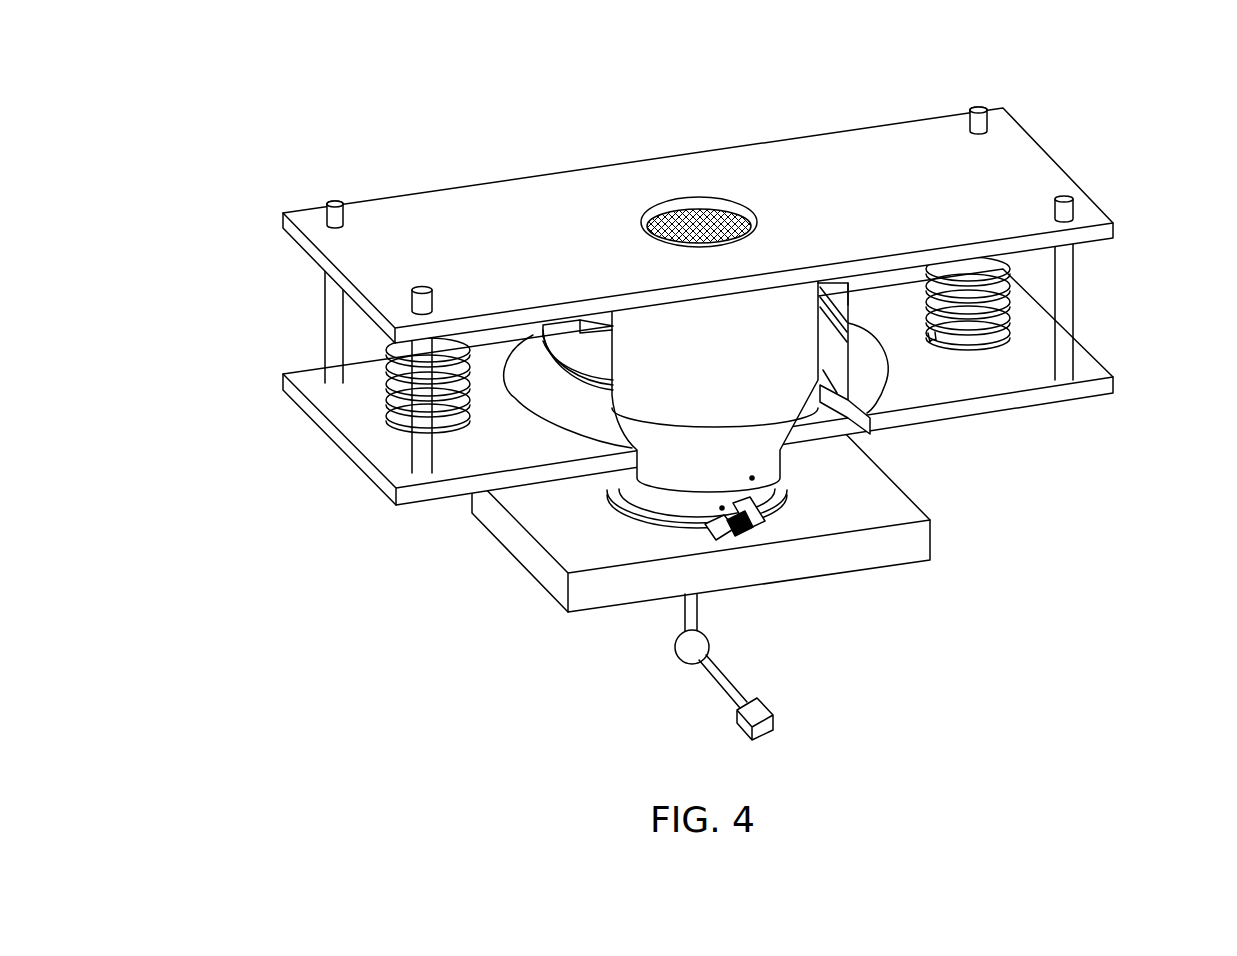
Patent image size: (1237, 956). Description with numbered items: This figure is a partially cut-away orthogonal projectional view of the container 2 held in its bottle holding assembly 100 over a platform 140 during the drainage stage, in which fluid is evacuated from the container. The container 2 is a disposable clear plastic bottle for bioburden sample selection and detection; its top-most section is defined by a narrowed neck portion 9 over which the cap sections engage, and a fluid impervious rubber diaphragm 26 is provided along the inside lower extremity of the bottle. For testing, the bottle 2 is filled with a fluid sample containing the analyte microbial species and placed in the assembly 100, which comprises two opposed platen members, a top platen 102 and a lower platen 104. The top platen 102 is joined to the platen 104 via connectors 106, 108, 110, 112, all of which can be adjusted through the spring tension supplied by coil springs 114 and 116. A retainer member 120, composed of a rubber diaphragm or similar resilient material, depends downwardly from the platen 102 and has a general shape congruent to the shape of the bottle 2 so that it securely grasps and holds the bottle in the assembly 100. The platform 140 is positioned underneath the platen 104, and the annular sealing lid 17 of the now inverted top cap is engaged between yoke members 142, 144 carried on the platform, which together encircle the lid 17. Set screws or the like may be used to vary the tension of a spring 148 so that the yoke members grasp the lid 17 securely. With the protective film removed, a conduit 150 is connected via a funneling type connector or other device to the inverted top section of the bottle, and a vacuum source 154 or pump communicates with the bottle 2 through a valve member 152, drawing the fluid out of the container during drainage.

The bottle holding assembly 100 is at (1125, 131).
The top platen 102 is at (457, 205).
The platen 104 is at (360, 473).
The connector 106 is at (337, 200).
The connector 108 is at (985, 110).
The connector 110 is at (1066, 198).
The connector 112 is at (422, 290).
The coil spring 114 is at (388, 388).
The coil spring 116 is at (1003, 318).
The fluid impervious rubber diaphragm 26 is at (704, 213).
The container 2 is at (737, 368).
The neck portion 9 is at (755, 479).
The retainer member 120 is at (575, 405).
The platform 140 is at (878, 500).
The yoke member 142 is at (630, 507).
The yoke member 144 is at (767, 500).
The spring 148 is at (743, 537).
The annular sealing lid portion 17 is at (716, 518).
The conduit 150 is at (698, 610).
The valve member 152 is at (675, 660).
The vacuum source 154 is at (737, 723).